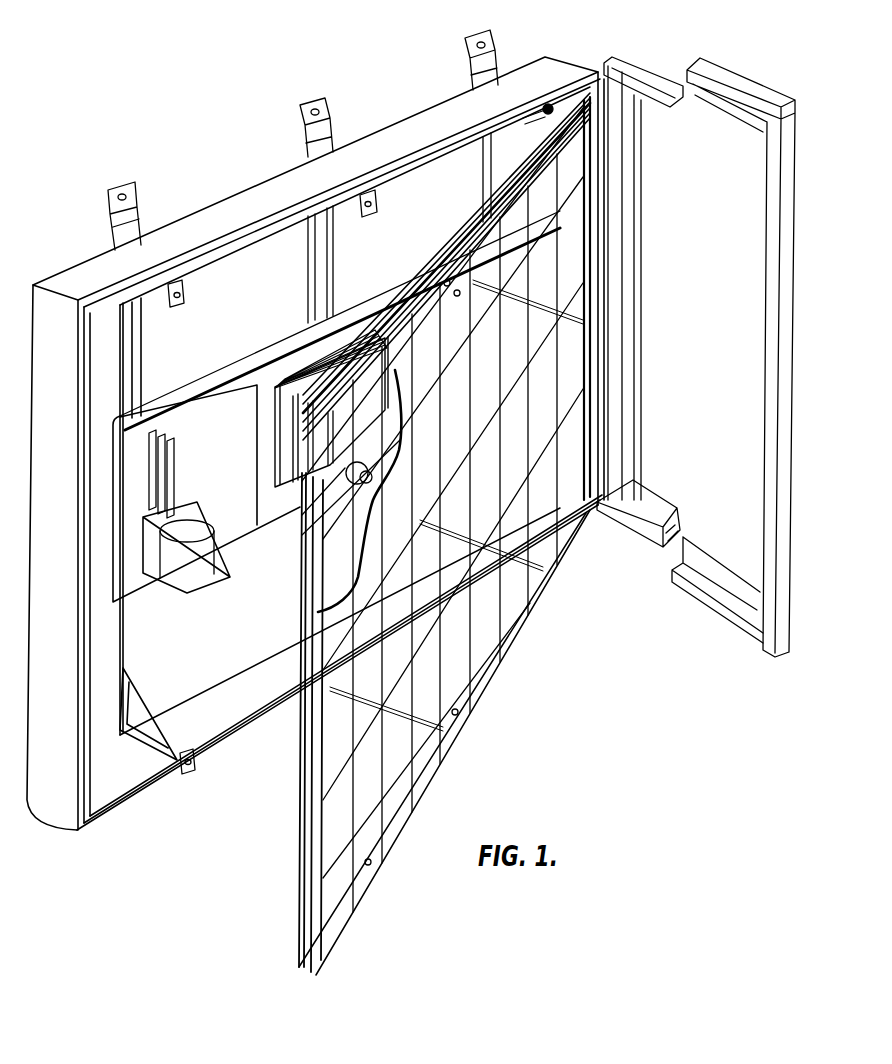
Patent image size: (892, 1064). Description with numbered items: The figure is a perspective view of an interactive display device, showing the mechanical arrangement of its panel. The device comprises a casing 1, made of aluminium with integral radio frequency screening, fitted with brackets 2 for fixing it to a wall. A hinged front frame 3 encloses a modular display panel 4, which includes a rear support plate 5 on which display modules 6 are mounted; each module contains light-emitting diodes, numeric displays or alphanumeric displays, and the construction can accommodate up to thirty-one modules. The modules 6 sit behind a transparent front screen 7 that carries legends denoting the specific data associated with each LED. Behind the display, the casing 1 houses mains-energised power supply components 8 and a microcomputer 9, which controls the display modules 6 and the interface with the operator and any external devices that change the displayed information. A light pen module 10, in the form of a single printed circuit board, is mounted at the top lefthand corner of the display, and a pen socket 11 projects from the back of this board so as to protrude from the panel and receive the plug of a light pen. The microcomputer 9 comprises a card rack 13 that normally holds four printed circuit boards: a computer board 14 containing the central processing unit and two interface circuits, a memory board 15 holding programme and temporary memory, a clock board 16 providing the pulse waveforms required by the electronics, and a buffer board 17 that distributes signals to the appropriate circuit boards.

The casing 1 is at (54, 707).
The brackets 2 is at (498, 57).
The hinged front frame 3 is at (643, 517).
The modular display panel 4 is at (423, 534).
The rear support plate 5 is at (296, 741).
The display modules 6 is at (335, 823).
The transparent front screen 7 is at (340, 585).
The power supply components 8 is at (182, 461).
The microcomputer 9 is at (308, 357).
The light pen module 10 is at (340, 512).
The pen socket 11 is at (310, 523).
The card rack 13 is at (276, 398).
The computer board 14 is at (313, 440).
The memory board 15 is at (305, 436).
The clock board 16 is at (235, 371).
The buffer board 17 is at (268, 405).